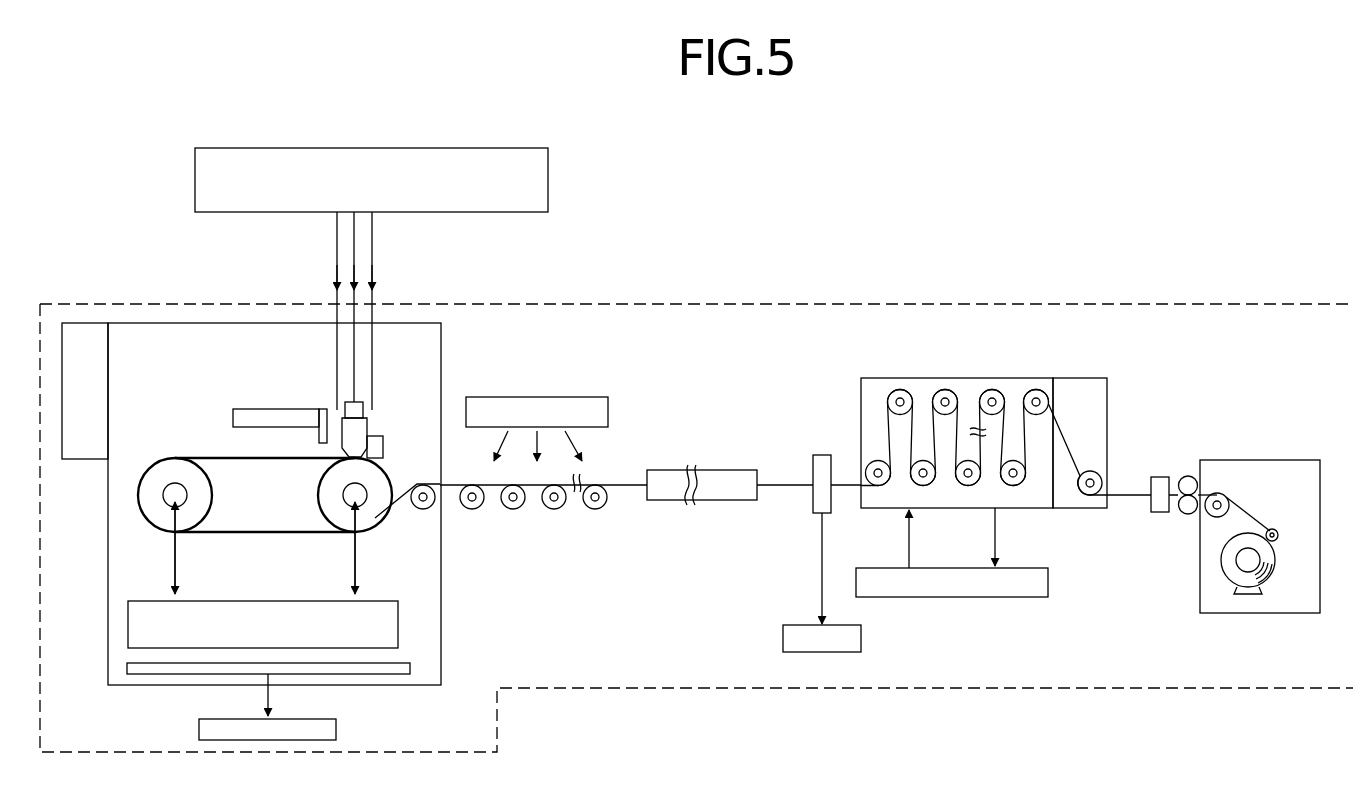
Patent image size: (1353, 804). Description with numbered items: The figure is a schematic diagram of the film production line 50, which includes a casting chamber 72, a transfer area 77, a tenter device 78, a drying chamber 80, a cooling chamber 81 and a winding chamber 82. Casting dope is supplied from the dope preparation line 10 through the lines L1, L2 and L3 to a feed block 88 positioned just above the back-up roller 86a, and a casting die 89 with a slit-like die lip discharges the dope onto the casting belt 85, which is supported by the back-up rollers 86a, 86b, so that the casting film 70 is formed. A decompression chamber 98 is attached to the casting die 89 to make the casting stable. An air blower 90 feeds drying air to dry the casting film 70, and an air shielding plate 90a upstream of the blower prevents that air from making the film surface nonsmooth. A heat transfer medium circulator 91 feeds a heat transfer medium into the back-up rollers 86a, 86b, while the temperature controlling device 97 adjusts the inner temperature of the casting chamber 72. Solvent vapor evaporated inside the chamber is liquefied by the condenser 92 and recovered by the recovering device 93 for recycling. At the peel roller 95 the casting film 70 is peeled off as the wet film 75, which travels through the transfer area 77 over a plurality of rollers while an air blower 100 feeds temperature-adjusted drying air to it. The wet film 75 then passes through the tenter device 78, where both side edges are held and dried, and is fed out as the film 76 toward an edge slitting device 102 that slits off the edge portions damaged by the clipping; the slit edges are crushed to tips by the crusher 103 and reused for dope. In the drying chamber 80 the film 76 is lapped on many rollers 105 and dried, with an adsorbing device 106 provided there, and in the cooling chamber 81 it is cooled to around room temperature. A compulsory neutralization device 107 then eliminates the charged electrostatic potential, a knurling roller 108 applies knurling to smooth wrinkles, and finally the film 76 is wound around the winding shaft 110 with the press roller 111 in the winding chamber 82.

The dope preparation line 10 is at (548, 181).
The dope line L1 is at (372, 236).
The dope line L2 is at (354, 263).
The dope line L3 is at (337, 237).
The film production line 50 is at (704, 694).
The casting film 70 is at (232, 456).
The casting chamber 72 is at (441, 618).
The wet film 75 is at (455, 485).
The film 76 is at (783, 485).
The transfer area 77 is at (623, 511).
The tenter device 78 is at (720, 500).
The drying chamber 80 is at (1008, 378).
The cooling chamber 81 is at (1078, 378).
The winding chamber 82 is at (1258, 460).
The casting belt 85 is at (388, 478).
The back-up roller 86a is at (378, 520).
The back-up roller 86b is at (145, 520).
The feed block 88 is at (363, 404).
The casting die 89 is at (366, 420).
The air blower 90 is at (274, 409).
The air shielding plate 90a is at (323, 409).
The heat transfer medium circulator 91 is at (128, 628).
The condenser 92 is at (372, 674).
The recovering device 93 is at (199, 731).
The peel roller 95 is at (422, 509).
The temperature controlling device 97 is at (85, 459).
The decompression chamber 98 is at (381, 440).
The air blower 100 is at (608, 410).
The edge slitting device 102 is at (822, 455).
The crusher 103 is at (783, 638).
The rollers 105 is at (985, 398).
The adsorbing device 106 is at (1048, 582).
The compulsory neutralization device 107 is at (1160, 477).
The knurling roller 108 is at (1188, 475).
The winding shaft 110 is at (1248, 595).
The press roller 111 is at (1272, 528).